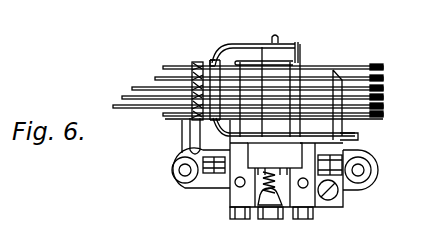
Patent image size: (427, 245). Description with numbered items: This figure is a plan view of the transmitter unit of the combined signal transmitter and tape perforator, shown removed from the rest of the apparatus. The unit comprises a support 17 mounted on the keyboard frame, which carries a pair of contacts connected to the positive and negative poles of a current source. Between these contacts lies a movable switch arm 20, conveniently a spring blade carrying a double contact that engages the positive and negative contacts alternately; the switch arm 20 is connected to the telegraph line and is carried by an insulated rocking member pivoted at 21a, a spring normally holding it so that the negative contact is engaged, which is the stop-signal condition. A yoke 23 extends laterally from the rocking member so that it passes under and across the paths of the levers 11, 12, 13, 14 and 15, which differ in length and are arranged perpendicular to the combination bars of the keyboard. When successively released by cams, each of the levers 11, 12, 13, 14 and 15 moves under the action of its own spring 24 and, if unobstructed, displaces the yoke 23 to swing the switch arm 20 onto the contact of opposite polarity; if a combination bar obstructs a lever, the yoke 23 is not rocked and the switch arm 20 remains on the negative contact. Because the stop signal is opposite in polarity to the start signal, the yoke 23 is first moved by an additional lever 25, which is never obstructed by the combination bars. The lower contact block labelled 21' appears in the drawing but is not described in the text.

The lever 11 is at (130, 108).
The lever 12 is at (134, 99).
The lever 13 is at (150, 90).
The lever 14 is at (157, 77).
The lever 15 is at (173, 66).
The support 17 is at (183, 176).
The movable switch arm 20 is at (257, 178).
The pivot 21a is at (275, 35).
The lower contact block 21' is at (275, 175).
The yoke 23 is at (213, 58).
The spring 24 is at (197, 62).
The lever 25 is at (180, 119).